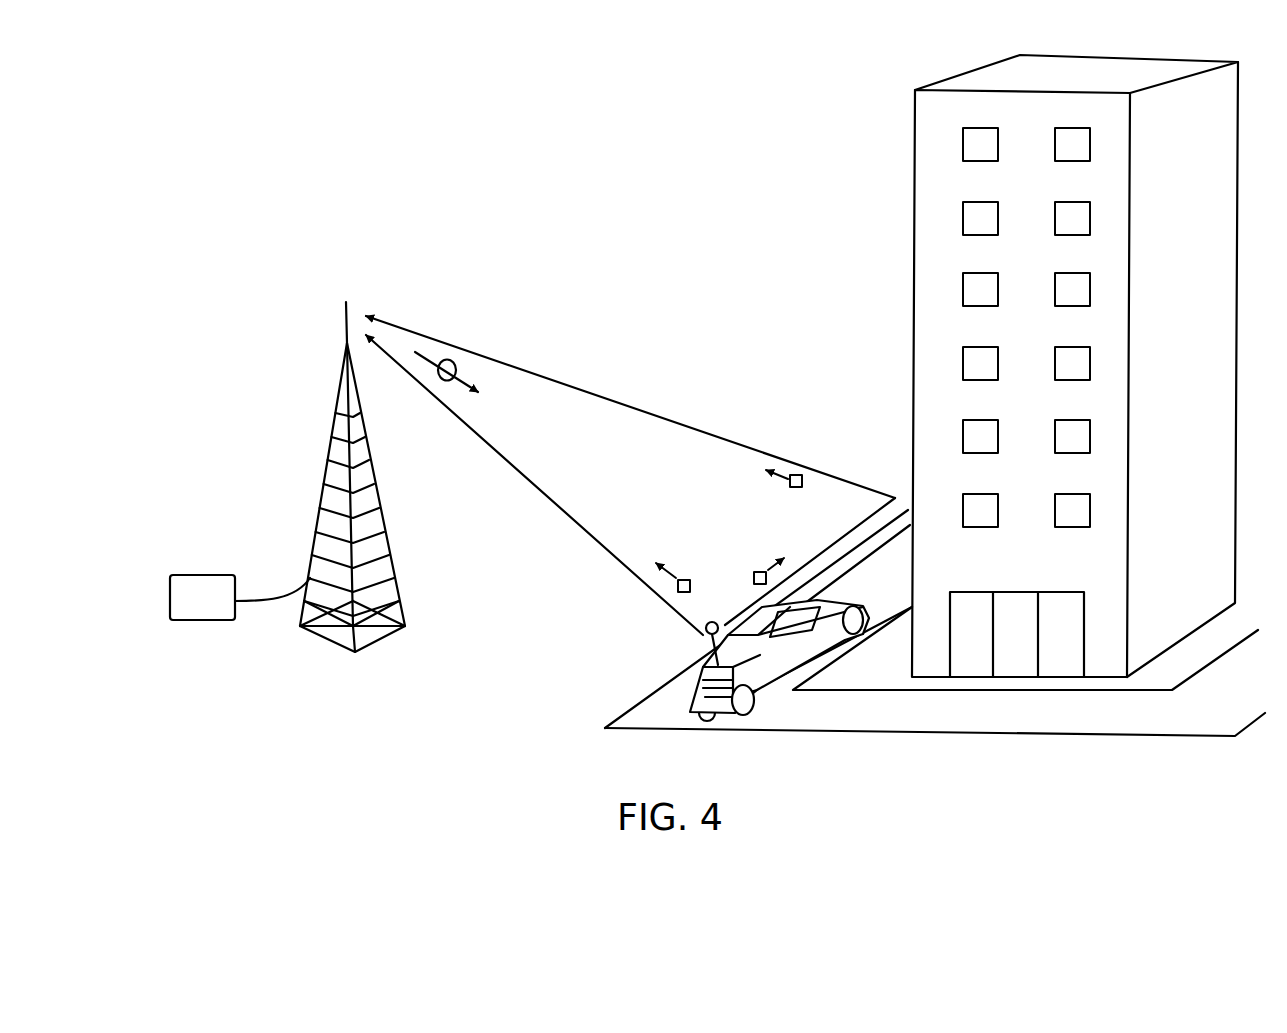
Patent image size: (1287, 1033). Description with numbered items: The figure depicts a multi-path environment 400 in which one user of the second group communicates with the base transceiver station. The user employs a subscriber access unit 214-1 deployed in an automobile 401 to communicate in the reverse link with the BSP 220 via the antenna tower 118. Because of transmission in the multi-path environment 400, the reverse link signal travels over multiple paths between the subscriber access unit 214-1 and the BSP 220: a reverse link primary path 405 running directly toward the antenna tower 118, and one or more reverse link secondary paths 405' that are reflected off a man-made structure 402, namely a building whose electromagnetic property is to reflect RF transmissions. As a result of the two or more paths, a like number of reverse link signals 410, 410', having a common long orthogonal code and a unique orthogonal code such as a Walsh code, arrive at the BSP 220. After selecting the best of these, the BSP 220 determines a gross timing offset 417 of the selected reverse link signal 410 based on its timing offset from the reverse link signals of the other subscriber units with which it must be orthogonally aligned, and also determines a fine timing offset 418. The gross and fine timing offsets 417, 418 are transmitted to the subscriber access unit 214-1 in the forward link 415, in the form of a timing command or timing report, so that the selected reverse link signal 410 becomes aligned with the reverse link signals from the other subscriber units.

The multi-path environment 400 is at (594, 172).
The man-made structure 402 is at (914, 182).
The antenna tower 118 is at (339, 388).
The BSP 220 is at (194, 574).
The reverse link primary path 405 is at (534, 485).
The reverse link secondary path 405' is at (630, 470).
The forward link 415 is at (511, 403).
The gross timing offset 417 is at (448, 288).
The fine timing offset 418 is at (447, 359).
The reverse link signal 410 is at (682, 565).
The reverse link signal 410' is at (555, 611).
The automobile 401 is at (830, 600).
The subscriber access unit 214-1 is at (684, 682).